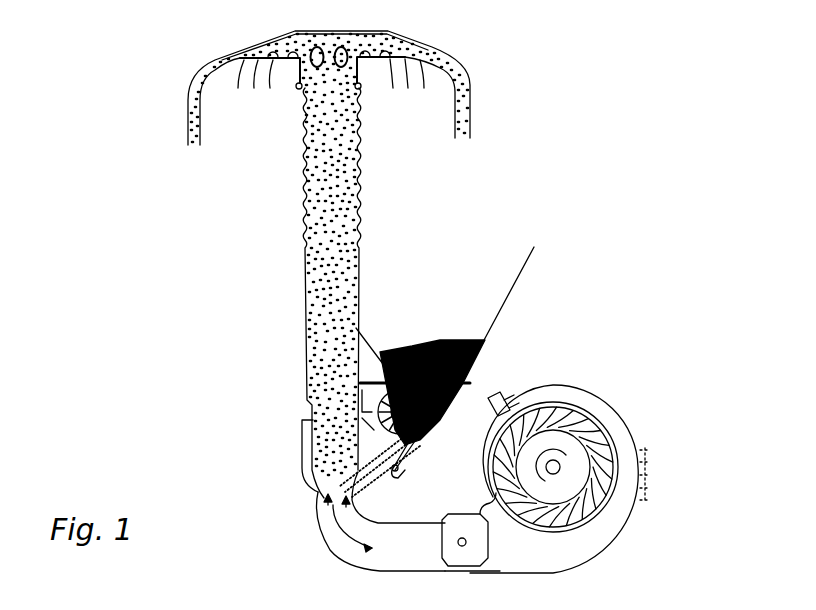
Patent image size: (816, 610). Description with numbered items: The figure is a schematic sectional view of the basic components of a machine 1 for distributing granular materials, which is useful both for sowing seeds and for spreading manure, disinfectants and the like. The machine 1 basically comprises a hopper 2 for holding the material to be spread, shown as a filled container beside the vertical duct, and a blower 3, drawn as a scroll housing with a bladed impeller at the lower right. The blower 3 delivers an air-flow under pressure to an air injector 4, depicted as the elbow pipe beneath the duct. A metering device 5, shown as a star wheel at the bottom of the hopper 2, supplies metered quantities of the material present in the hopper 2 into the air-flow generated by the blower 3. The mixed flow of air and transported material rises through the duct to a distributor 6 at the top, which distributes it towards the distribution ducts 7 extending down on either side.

The machine for distributing granular materials 1 is at (237, 297).
The hopper 2 is at (513, 284).
The blower 3 is at (589, 390).
The air injector 4 is at (315, 507).
The metering device 5 is at (367, 390).
The distributor 6 is at (297, 86).
The distribution ducts 7 is at (185, 125).